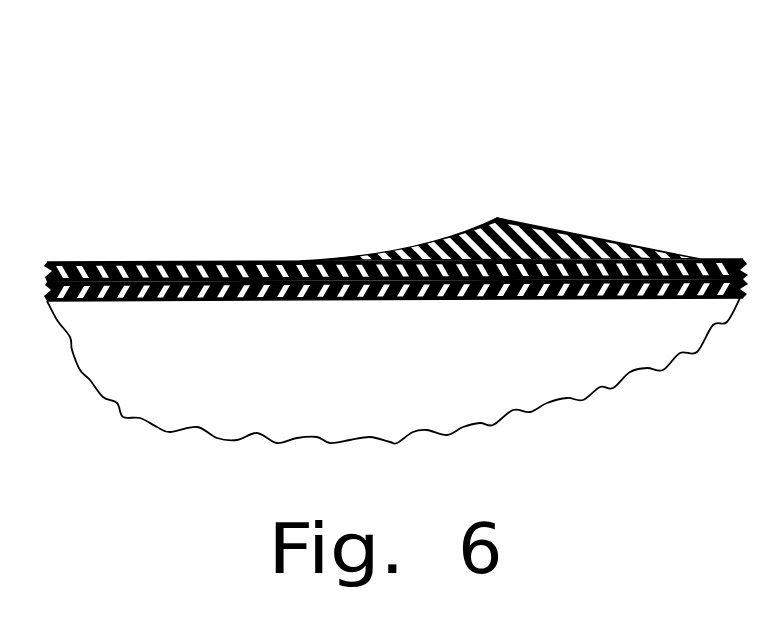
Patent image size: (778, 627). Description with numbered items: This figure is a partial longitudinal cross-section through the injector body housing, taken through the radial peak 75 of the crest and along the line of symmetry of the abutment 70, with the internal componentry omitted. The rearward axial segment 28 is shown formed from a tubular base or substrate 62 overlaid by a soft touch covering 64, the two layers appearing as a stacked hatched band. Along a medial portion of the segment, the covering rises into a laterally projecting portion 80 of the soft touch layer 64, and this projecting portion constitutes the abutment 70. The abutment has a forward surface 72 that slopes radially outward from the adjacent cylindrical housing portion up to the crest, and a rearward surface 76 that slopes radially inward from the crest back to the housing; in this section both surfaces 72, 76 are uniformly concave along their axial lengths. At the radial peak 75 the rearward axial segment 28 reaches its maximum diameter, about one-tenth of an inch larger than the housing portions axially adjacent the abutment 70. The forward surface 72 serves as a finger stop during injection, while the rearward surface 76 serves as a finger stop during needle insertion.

The rearward axial segment 28 is at (135, 466).
The tubular base or substrate 62 is at (625, 296).
The soft touch covering 64 is at (585, 250).
The abutment 70 is at (461, 108).
The forward surface 72 is at (350, 257).
The radial peak 75 is at (497, 217).
The rearward surface 76 is at (641, 257).
The laterally projecting portion 80 is at (540, 238).